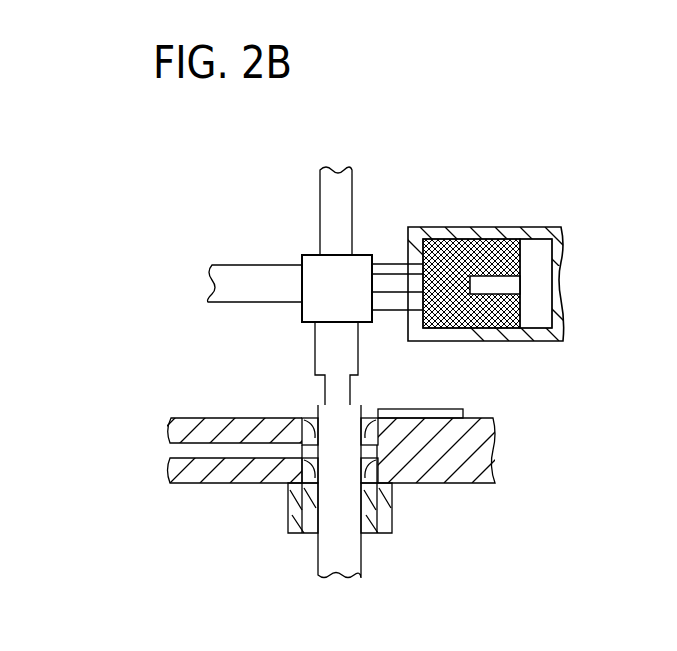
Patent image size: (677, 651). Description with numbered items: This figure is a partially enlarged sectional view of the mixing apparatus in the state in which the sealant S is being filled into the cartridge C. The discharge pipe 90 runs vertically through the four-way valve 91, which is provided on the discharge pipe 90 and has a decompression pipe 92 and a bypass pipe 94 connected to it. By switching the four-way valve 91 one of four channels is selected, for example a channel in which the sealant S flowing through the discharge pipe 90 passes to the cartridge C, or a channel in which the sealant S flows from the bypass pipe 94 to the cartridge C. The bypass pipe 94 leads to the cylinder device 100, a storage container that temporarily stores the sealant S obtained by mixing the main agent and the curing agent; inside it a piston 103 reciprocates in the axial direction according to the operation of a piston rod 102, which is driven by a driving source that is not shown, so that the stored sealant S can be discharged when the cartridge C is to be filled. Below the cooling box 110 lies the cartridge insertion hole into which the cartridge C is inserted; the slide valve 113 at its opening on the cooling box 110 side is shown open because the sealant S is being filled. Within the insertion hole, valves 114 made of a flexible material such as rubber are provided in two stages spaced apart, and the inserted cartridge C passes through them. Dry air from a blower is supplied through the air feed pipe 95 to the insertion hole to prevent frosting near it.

The discharge pipe 90 is at (320, 185).
The four-way valve 91 is at (308, 254).
The decompression pipe 92 is at (248, 303).
The bypass pipe 94 is at (384, 262).
The air feed pipe 95 is at (170, 452).
The cylinder device 100 is at (477, 229).
The piston rod 102 is at (563, 280).
The piston 103 is at (556, 312).
The cooling box 110 is at (467, 484).
The slide valve 113 is at (418, 406).
The valves 114 is at (312, 420).
The sealant S is at (472, 328).
The cartridge C is at (362, 566).